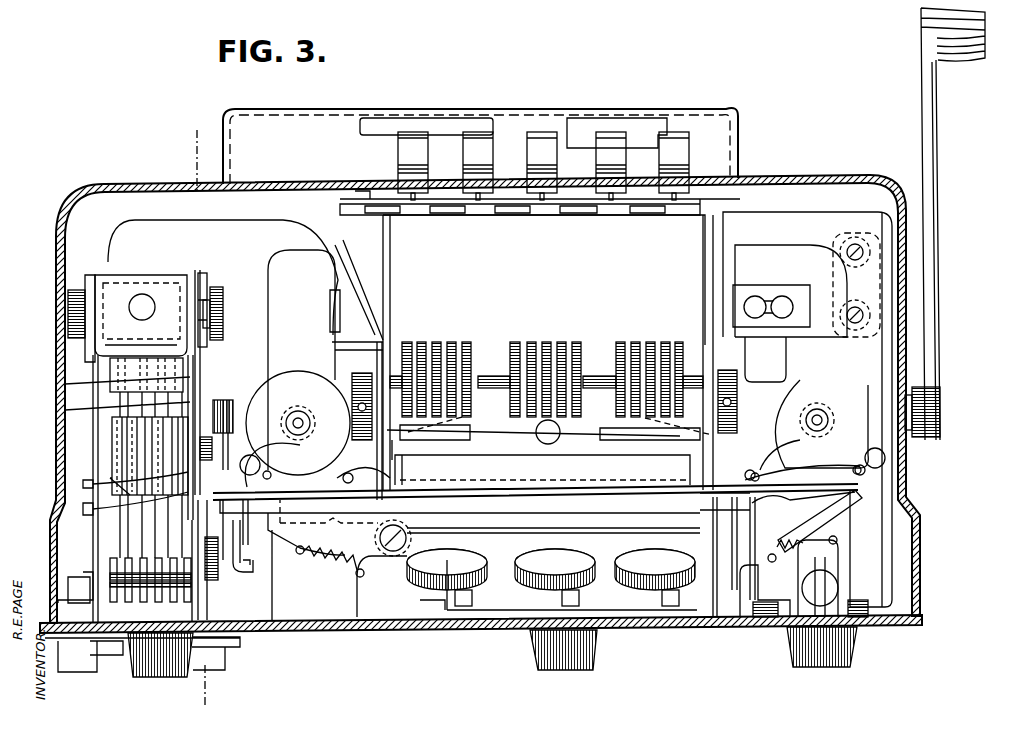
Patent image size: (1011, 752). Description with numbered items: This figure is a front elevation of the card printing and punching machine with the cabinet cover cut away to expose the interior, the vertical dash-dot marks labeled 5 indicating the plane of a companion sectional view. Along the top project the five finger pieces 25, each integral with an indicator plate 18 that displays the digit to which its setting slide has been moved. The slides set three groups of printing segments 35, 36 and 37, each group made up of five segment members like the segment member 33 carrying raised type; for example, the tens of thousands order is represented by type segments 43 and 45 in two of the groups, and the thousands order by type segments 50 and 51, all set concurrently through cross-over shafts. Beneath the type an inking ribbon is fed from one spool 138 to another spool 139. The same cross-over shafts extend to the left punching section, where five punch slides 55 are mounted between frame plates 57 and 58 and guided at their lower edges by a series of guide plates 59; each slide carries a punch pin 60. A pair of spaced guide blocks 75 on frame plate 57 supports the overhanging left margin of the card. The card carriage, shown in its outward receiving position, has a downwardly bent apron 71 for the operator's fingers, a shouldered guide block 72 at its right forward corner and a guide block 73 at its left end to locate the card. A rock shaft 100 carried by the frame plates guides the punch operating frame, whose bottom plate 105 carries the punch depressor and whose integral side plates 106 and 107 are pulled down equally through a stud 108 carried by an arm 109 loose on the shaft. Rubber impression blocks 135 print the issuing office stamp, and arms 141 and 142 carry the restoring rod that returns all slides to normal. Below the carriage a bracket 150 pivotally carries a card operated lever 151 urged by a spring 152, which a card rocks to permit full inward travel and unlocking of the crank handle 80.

The section line 5- 5 is at (240, 147).
The indicator plate 18 is at (640, 213).
The finger piece 25 is at (670, 142).
The segment member 33 is at (416, 350).
The type member group 35 is at (610, 403).
The type member group 36 is at (568, 405).
The type member group 37 is at (412, 403).
The type segment 43 is at (512, 350).
The type segment 45 is at (428, 350).
The type segment 50 is at (525, 350).
The type segment 51 is at (628, 350).
The punch slide 55 is at (130, 440).
The frame plate 57 is at (65, 384).
The frame plate 58 is at (194, 397).
The guide plate 59 is at (187, 553).
The punch pin 60 is at (65, 410).
The apron 71 is at (535, 552).
The guide block 72 is at (690, 470).
The guide block 73 is at (212, 483).
The guide blocks 75 is at (108, 507).
The crank handle 80 is at (935, 188).
The rock shaft 100 is at (68, 312).
The bottom plate 105 is at (93, 352).
The side plate 106 is at (112, 272).
The side plate 107 is at (183, 292).
The stud 108 is at (187, 313).
The arm 109 is at (201, 280).
The rubber impression block 135 is at (552, 579).
The spool 138 is at (867, 400).
The spool 139 is at (260, 393).
The arm 141 is at (745, 358).
The arm 142 is at (377, 366).
The bracket 150 is at (235, 578).
The card operated lever 151 is at (245, 542).
The spring 152 is at (245, 560).